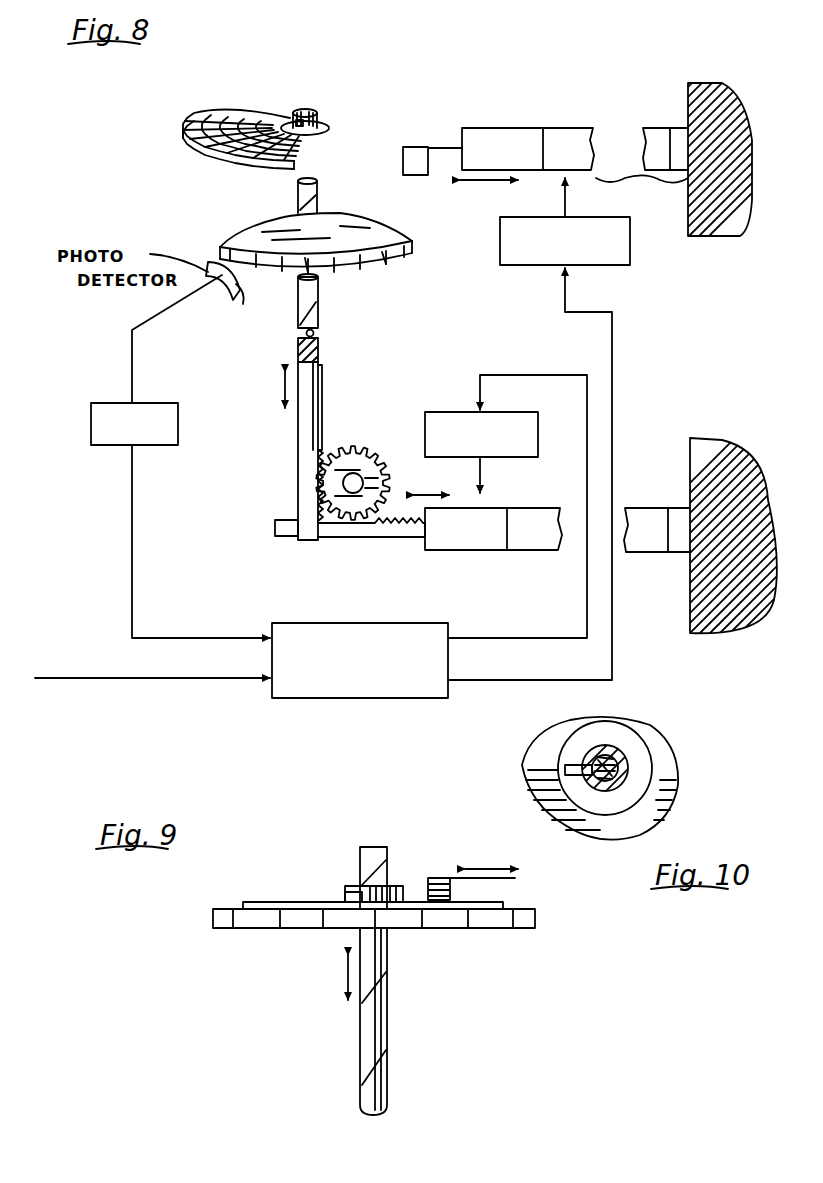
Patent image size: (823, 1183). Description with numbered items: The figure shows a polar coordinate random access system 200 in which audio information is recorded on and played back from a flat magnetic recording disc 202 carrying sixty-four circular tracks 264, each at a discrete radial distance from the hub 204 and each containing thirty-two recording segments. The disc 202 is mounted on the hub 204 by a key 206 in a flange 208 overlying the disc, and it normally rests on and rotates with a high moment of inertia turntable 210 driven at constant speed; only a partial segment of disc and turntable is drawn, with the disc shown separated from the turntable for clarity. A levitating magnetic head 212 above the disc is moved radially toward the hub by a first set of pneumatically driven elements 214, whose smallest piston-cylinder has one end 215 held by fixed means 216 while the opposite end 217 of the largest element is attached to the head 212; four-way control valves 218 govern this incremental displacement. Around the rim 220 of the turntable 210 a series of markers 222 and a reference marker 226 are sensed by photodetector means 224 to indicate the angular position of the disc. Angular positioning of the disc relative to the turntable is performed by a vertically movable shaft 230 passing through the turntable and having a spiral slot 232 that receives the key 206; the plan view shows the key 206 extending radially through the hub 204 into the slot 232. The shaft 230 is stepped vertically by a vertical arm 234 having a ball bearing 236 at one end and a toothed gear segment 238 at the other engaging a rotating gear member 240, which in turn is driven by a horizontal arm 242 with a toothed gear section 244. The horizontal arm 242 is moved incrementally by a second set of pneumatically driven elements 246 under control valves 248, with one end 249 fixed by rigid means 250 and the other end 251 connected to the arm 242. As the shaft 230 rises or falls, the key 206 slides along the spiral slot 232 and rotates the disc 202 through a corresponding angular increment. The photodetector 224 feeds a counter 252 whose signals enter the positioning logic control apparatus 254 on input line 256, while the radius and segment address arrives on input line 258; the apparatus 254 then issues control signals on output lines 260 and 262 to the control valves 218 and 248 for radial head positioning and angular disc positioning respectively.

In FIG. 8, the polar coordinate system 200 is at (290, 68).
In FIG. 8, the magnetic recording disc 202 is at (190, 118).
In FIG. 9, the magnetic recording disc 202 is at (290, 902).
In FIG. 10, the magnetic recording disc 202 is at (664, 787).
In FIG. 8, the hub 204 is at (315, 112).
In FIG. 9, the hub 204 is at (395, 886).
In FIG. 10, the hub 204 is at (592, 755).
In FIG. 8, the key 206 is at (299, 122).
In FIG. 9, the key 206 is at (350, 892).
In FIG. 10, the key 206 is at (575, 767).
In FIG. 8, the flange 208 is at (330, 126).
In FIG. 10, the flange 208 is at (620, 735).
In FIG. 8, the circular tracks 264 is at (226, 108).
In FIG. 8, the turntable 210 is at (400, 236).
In FIG. 9, the turntable 210 is at (222, 909).
In FIG. 8, the magnetic head 212 is at (415, 176).
In FIG. 9, the magnetic head 212 is at (445, 878).
In FIG. 8, the first set of pneumatically driven elements 214 is at (555, 125).
In FIG. 8, the end of smallest piston-cylinder 215 is at (677, 140).
In FIG. 8, the fixed means 216 is at (718, 234).
In FIG. 8, the end of largest piston-cylinder element 217 is at (462, 134).
In FIG. 8, the control valves 218 is at (615, 266).
In FIG. 8, the rim 220 is at (414, 250).
In FIG. 8, the markers 222 is at (384, 266).
In FIG. 8, the photodetector means 224 is at (236, 298).
In FIG. 8, the reference marker 226 is at (312, 270).
In FIG. 8, the shaft 230 is at (318, 192).
In FIG. 9, the shaft 230 is at (373, 856).
In FIG. 10, the shaft 230 is at (630, 760).
In FIG. 8, the spiral slot 232 is at (318, 206).
In FIG. 9, the spiral slot 232 is at (386, 980).
In FIG. 10, the spiral slot 232 is at (606, 781).
In FIG. 8, the vertical arm 234 is at (320, 392).
In FIG. 8, the ball bearing 236 is at (320, 334).
In FIG. 8, the toothed gear segment 238 is at (322, 448).
In FIG. 8, the rotating gear member 240 is at (368, 452).
In FIG. 8, the horizontal arm 242 is at (350, 538).
In FIG. 8, the toothed gear section 244 is at (400, 520).
In FIG. 8, the second set of pneumatically driven elements 246 is at (545, 552).
In FIG. 8, the control valves 248 is at (522, 458).
In FIG. 8, the end of pneumatic driven elements 249 is at (677, 508).
In FIG. 8, the rigid means 250 is at (728, 632).
In FIG. 8, the other end of pneumatic driven elements 251 is at (430, 552).
In FIG. 8, the counter 252 is at (180, 422).
In FIG. 8, the positioning logic control apparatus 254 is at (305, 624).
In FIG. 8, the input line 256 is at (190, 636).
In FIG. 8, the input line 258 is at (238, 680).
In FIG. 8, the output line 260 is at (490, 638).
In FIG. 8, the output line 262 is at (490, 680).